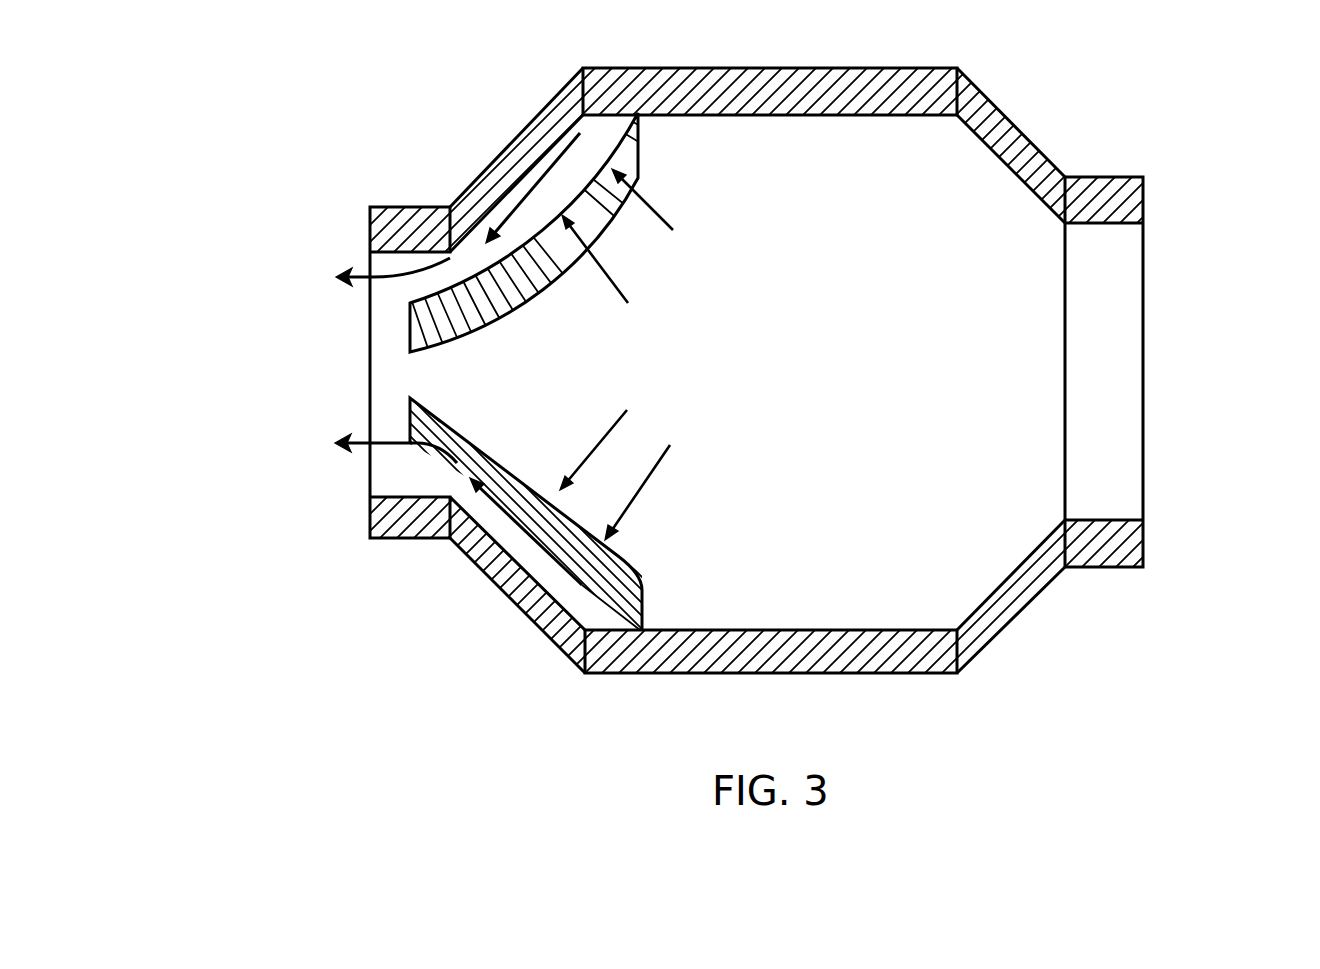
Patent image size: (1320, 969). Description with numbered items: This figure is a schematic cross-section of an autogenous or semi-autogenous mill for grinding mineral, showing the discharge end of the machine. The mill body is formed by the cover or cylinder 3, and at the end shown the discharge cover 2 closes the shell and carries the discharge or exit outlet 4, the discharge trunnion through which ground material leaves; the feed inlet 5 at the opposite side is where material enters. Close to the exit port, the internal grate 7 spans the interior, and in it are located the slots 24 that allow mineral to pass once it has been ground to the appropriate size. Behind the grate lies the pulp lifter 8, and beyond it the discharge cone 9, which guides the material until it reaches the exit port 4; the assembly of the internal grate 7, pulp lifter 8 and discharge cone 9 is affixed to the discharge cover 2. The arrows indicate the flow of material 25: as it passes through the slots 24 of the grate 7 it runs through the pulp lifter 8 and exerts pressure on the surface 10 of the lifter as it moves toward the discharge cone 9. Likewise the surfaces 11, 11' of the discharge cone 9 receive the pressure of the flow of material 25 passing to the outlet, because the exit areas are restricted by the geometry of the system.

The discharge cover 2 is at (532, 122).
The cover or cylinder 3 is at (863, 675).
The discharge or exit outlet 4 is at (330, 375).
The feed inlet 5 is at (1177, 399).
The internal grate 7 is at (612, 208).
The pulp lifter 8 is at (565, 601).
The discharge cone 9 is at (456, 492).
The surface 10 is at (565, 613).
The surface 11 is at (607, 455).
The surface 11' is at (343, 511).
The slots 24 is at (558, 248).
The flow of material 25 is at (340, 276).